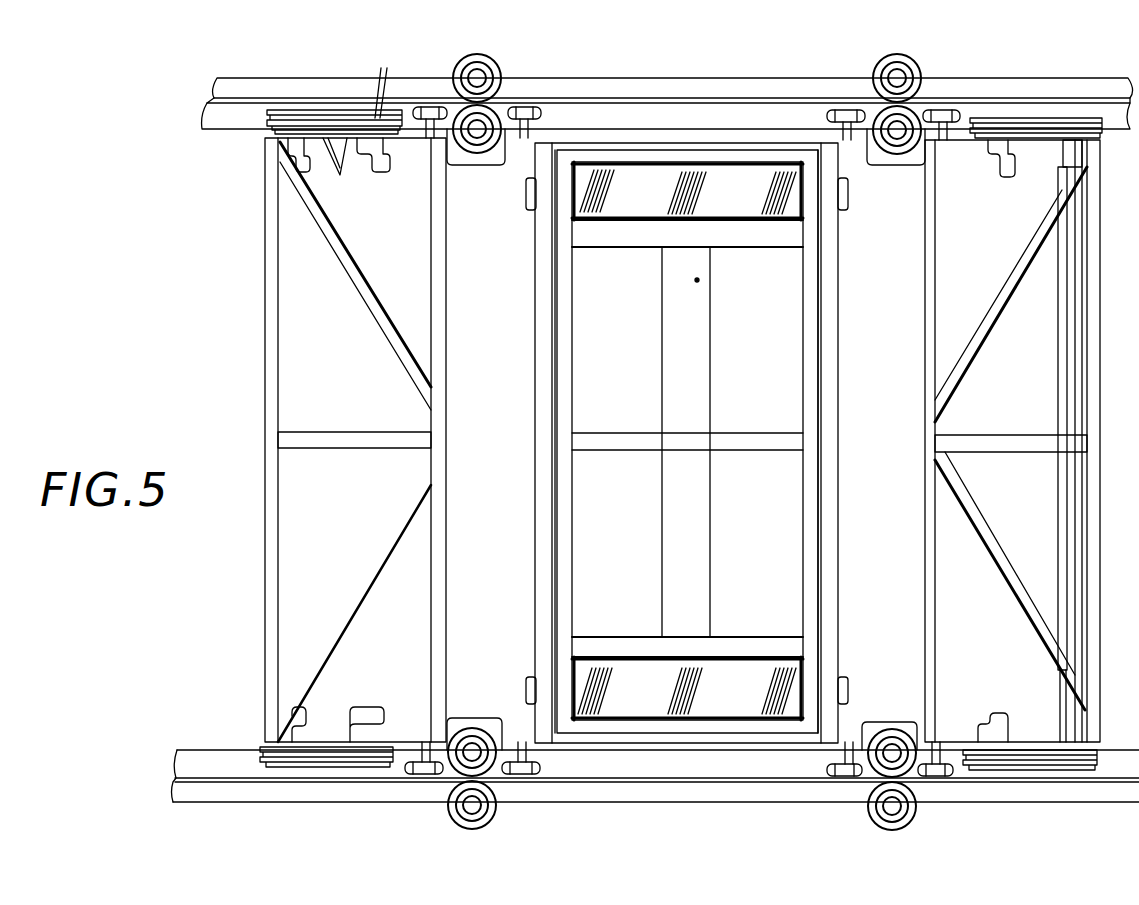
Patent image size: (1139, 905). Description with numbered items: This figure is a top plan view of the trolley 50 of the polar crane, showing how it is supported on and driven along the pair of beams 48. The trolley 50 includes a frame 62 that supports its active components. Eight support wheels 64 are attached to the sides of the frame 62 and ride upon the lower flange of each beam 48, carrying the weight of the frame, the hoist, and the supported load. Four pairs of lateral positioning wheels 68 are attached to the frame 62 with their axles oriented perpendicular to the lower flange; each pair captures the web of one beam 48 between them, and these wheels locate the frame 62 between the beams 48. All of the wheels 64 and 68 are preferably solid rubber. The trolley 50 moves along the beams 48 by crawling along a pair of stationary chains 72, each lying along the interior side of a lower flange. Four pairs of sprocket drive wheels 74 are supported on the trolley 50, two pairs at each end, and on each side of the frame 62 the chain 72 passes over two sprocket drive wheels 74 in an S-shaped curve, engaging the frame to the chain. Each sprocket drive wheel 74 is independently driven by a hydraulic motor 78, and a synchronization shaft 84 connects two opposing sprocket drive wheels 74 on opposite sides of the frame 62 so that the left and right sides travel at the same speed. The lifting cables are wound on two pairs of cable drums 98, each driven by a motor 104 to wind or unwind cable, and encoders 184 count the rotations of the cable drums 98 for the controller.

The beam 48 is at (238, 78).
The trolley 50 is at (840, 332).
The frame 62 is at (552, 313).
The support wheels 64 is at (431, 106).
The lateral positioning wheels 68 is at (500, 120).
The stationary chain 72 is at (380, 78).
The sprocket drive wheel 74 is at (346, 173).
The hydraulic motor 78 is at (296, 158).
The synchronization shaft 84 is at (1062, 548).
The cable drum 98 is at (735, 662).
The motor 104 is at (848, 682).
The encoder 184 is at (525, 682).